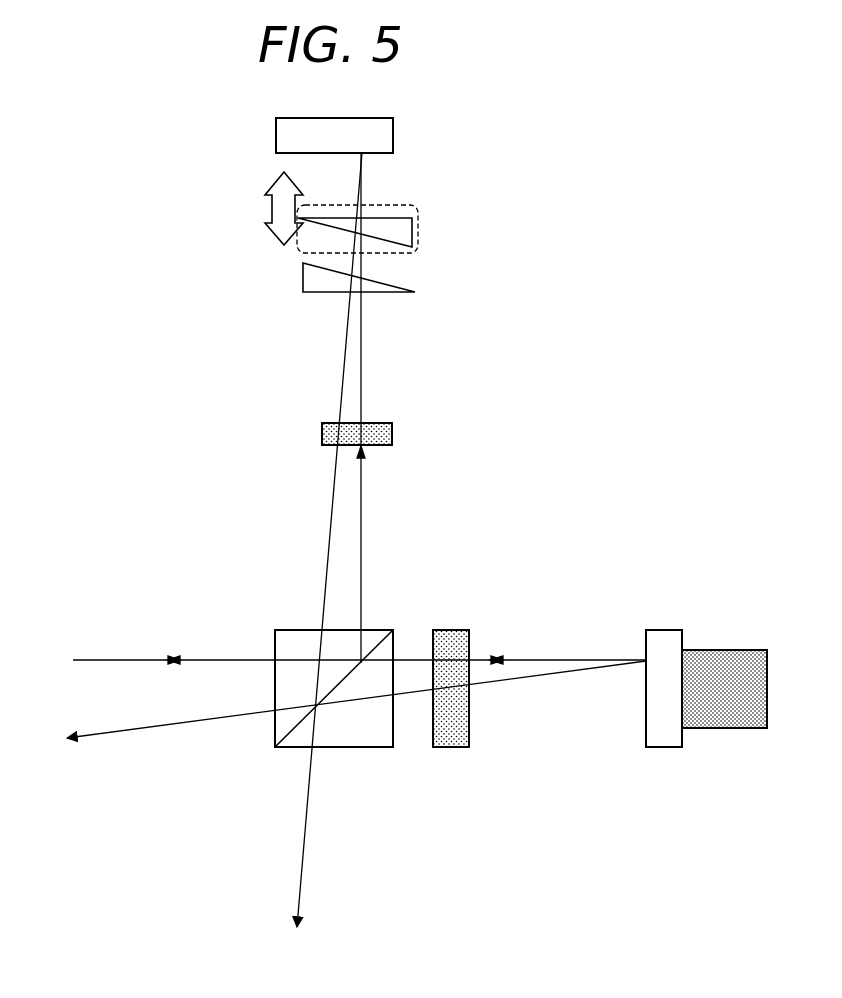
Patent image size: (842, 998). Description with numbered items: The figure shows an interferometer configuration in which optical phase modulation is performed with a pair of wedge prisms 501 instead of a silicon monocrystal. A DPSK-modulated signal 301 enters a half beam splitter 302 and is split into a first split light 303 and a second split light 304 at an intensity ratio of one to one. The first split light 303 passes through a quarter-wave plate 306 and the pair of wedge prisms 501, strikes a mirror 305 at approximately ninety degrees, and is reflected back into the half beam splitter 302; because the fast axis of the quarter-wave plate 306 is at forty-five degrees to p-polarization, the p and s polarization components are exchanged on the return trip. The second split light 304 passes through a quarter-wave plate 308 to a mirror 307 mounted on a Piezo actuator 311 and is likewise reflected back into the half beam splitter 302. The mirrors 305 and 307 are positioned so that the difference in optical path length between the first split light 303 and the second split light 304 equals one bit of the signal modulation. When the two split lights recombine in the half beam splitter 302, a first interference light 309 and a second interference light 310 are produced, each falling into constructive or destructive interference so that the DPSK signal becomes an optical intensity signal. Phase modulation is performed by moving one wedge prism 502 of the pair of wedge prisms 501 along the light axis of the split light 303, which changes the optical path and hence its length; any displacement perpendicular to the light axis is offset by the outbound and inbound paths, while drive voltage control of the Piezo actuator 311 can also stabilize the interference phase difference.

The modulated signal 301 is at (125, 660).
The half beam splitter 302 is at (287, 630).
The first split light 303 is at (361, 523).
The second split light 304 is at (413, 660).
The mirror 305 is at (394, 131).
The quarter-wave plate 306 is at (393, 433).
The mirror 307 is at (662, 748).
The quarter-wave plate 308 is at (449, 748).
The first interference light 309 is at (132, 730).
The second interference light 310 is at (300, 874).
The Piezo actuator 311 is at (725, 729).
The pair of wedge prisms 501 is at (243, 205).
The wedge prism 502 is at (418, 228).